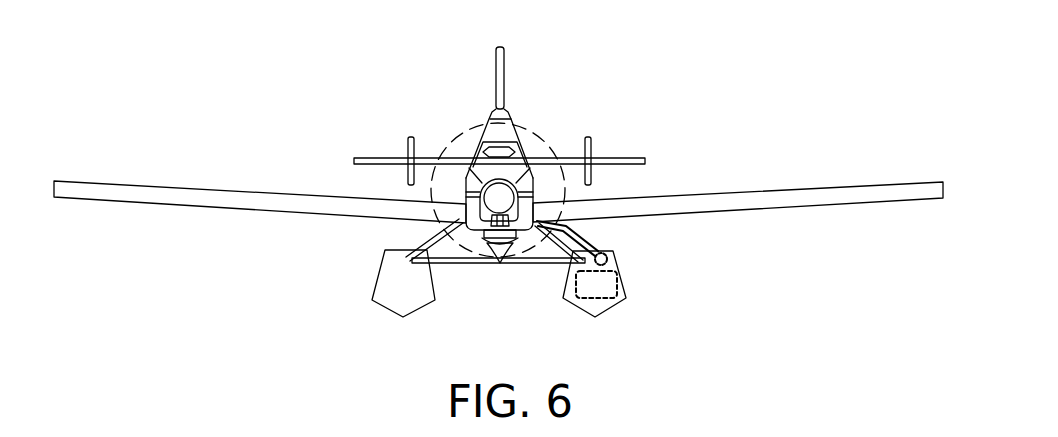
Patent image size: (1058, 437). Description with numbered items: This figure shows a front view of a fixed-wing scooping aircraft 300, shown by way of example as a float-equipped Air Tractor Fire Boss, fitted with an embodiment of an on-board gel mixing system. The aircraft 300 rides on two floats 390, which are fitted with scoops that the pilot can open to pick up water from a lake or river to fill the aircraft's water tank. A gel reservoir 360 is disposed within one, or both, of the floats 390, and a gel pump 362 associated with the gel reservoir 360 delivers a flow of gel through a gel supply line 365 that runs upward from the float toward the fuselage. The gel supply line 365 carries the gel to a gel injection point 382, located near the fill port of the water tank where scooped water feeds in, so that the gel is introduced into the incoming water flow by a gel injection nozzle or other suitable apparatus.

The aircraft 300 is at (559, 97).
The gel injection point 382 is at (548, 152).
The gel supply line 365 is at (598, 229).
The gel pump 362 is at (612, 260).
The gel reservoir 360 is at (592, 288).
The floats 390 is at (378, 278).